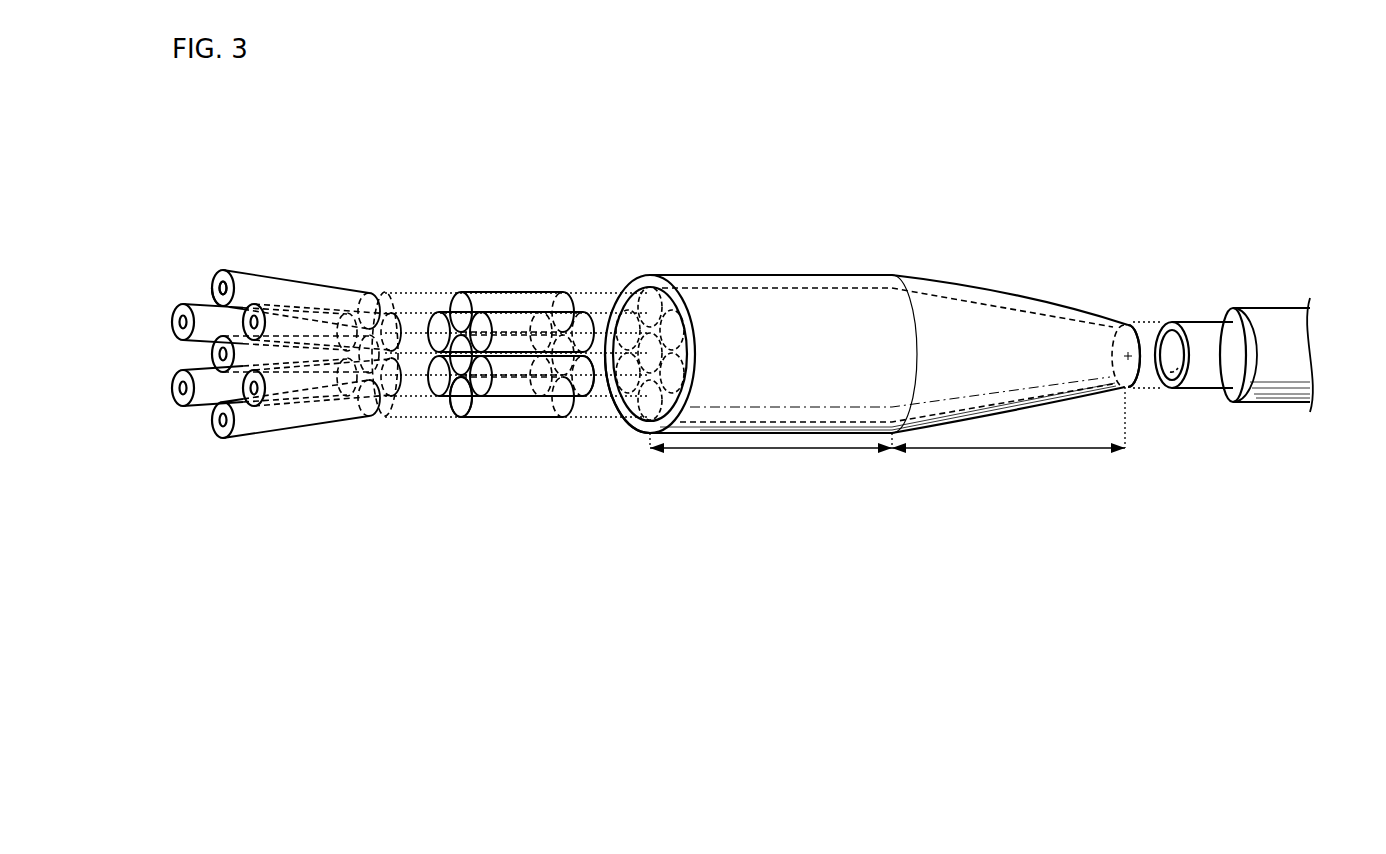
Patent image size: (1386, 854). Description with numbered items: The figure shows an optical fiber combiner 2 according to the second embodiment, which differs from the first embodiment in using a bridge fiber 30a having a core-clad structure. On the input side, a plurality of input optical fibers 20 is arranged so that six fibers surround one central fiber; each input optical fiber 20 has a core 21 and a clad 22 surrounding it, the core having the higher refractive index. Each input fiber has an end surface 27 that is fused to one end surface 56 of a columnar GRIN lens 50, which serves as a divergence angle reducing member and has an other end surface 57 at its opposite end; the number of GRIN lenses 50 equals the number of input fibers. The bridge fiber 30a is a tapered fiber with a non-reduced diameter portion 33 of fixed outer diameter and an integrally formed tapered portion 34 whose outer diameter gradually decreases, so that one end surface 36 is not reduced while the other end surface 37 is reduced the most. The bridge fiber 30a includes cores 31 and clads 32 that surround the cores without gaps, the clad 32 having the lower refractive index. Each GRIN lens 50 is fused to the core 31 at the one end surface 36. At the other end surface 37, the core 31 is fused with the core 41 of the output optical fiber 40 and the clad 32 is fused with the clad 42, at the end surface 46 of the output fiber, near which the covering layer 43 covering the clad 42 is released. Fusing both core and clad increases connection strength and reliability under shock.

The optical fiber combiner 2 is at (845, 127).
The input optical fiber 20 is at (192, 310).
The core 21 is at (222, 284).
The clad 22 is at (214, 294).
The end surface 27 is at (390, 420).
The bridge fiber 30a is at (897, 292).
The core 31 is at (647, 302).
The clad 32 is at (672, 295).
The non-reduced diameter portion 33 is at (771, 454).
The tapered portion 34 is at (1008, 431).
The one end surface 36 is at (628, 418).
The other end surface 37 is at (1135, 392).
The output optical fiber 40 is at (1268, 310).
The core 41 is at (1170, 352).
The clad 42 is at (1187, 325).
The covering layer 43 is at (1233, 318).
The end surface 46 is at (1172, 373).
The GRIN lens 50 is at (452, 322).
The one end surface 56 is at (455, 412).
The other end surface 57 is at (578, 412).